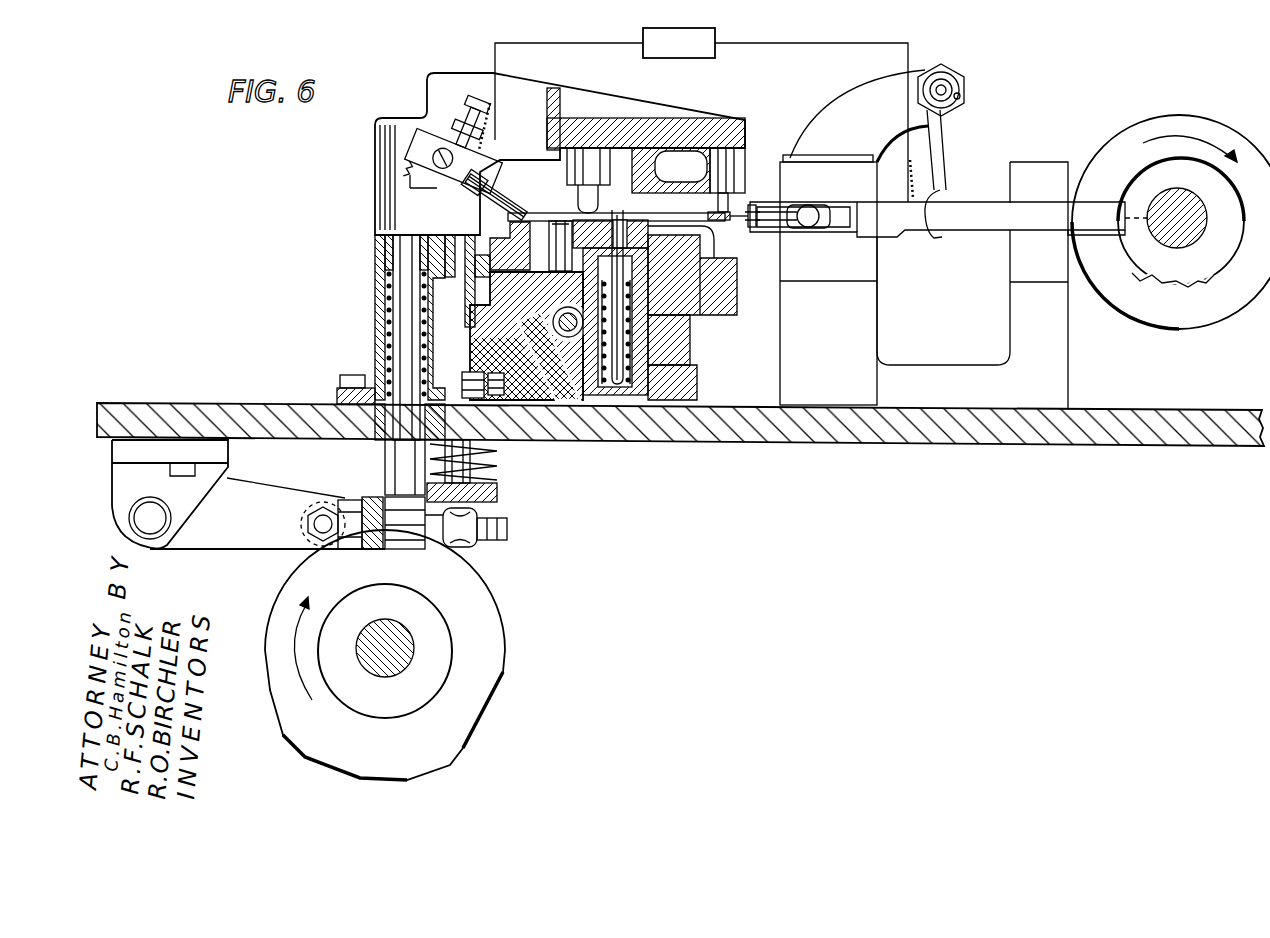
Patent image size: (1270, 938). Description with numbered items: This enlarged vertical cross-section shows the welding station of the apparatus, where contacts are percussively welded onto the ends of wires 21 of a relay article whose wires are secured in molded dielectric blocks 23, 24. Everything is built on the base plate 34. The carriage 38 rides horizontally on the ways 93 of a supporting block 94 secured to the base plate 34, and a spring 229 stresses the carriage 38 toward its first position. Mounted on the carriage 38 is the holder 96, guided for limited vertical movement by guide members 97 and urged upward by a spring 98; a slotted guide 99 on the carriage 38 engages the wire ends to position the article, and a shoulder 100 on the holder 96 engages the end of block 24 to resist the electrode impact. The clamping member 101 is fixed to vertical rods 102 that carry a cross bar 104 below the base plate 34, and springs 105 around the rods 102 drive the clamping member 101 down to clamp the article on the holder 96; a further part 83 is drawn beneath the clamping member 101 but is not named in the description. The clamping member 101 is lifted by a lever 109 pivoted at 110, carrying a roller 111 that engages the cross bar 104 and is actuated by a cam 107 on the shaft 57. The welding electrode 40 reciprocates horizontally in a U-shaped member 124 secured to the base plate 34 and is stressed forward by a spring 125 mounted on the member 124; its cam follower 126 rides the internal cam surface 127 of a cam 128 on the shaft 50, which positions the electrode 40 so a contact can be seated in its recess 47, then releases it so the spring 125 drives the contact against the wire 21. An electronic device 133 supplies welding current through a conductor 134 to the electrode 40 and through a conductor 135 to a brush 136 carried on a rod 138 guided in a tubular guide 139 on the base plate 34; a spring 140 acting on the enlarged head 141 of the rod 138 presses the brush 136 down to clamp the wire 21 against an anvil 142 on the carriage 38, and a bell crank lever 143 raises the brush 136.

The wires 21 is at (700, 210).
The molded block 23 is at (712, 202).
The molded block 24 is at (620, 210).
The base plate 34 is at (286, 415).
The carriage 38 is at (695, 316).
The welding electrode 40 is at (785, 231).
The recess 47 is at (756, 212).
The drive shaft 50 is at (1187, 200).
The shaft 57 is at (406, 640).
The plunger 83 is at (641, 176).
The ways 93 is at (672, 353).
The supporting block 94 is at (680, 381).
The holder 96 is at (690, 240).
The guide members 97 is at (560, 245).
The spring 98 is at (638, 322).
The slotted guide 99 is at (753, 228).
The shoulder 100 is at (557, 222).
The clamping member 101 is at (680, 133).
The rods 102 is at (498, 452).
The cross bar 104 is at (498, 495).
The springs 105 is at (498, 468).
The cam 107 is at (478, 600).
The lever 109 is at (270, 535).
The pivot 110 is at (158, 538).
The roller 111 is at (482, 544).
The U-shaped member 124 is at (1015, 307).
The spring 125 is at (940, 150).
The cam follower 126 is at (1113, 217).
The internal cam surface 127 is at (1130, 180).
The cam 128 is at (1172, 120).
The electronic device 133 is at (679, 43).
The conductor 134 is at (815, 48).
The conductor 135 is at (600, 48).
The brush 136 is at (513, 207).
The rod 138 is at (405, 256).
The tubular guide 139 is at (383, 300).
The spring 140 is at (388, 338).
The enlarged head 141 is at (402, 449).
The anvil 142 is at (520, 250).
The bell crank lever 143 is at (380, 497).
The spring 229 is at (572, 338).